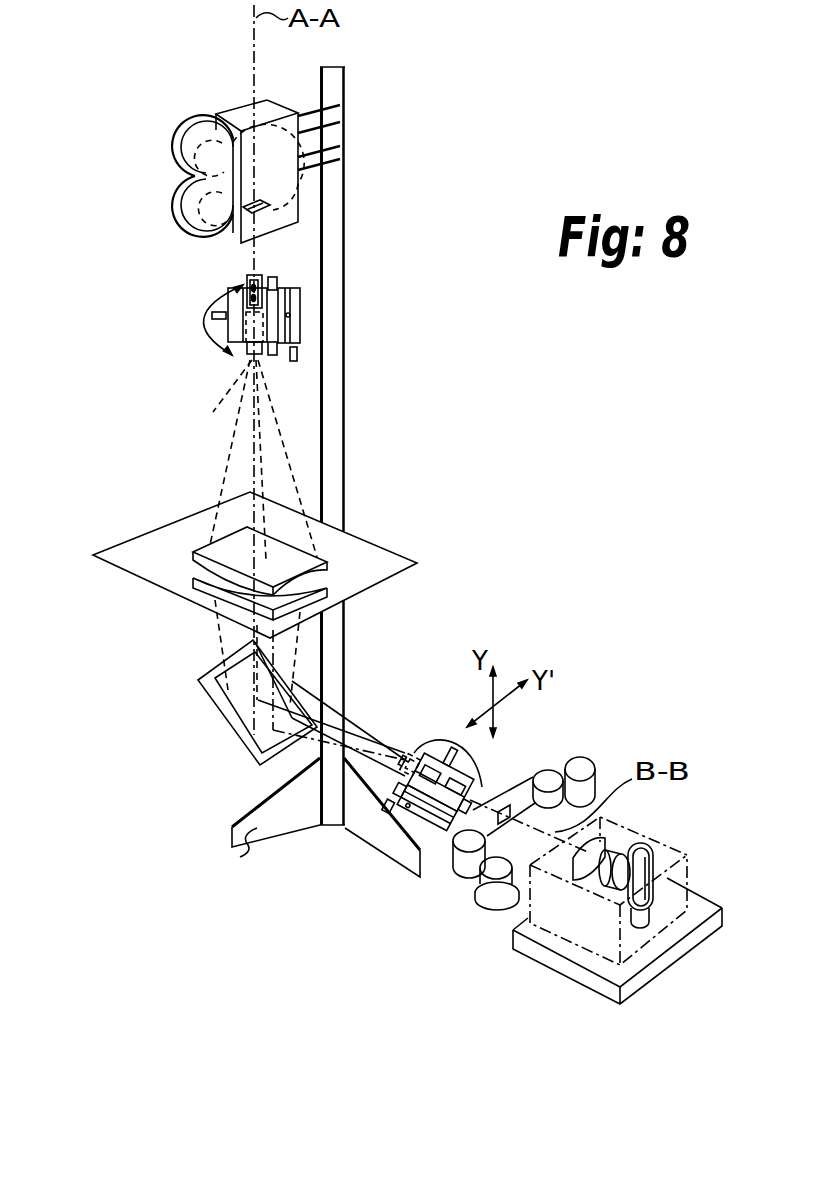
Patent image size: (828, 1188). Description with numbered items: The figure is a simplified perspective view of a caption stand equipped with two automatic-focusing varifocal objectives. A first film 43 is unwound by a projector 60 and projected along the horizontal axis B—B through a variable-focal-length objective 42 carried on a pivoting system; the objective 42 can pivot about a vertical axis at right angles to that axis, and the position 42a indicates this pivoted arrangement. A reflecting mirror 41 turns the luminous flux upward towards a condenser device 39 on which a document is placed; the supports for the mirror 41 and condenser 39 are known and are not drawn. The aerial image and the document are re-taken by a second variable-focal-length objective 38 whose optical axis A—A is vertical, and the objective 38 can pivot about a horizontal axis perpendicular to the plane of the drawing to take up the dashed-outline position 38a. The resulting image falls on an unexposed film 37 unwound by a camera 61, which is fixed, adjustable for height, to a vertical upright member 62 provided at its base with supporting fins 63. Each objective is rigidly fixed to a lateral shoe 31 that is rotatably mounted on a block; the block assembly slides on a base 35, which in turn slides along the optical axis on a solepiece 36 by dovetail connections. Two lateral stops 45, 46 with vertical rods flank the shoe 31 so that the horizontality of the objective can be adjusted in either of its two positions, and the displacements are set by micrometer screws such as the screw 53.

The lateral shoe 31 is at (245, 338).
The base 35 is at (284, 290).
The solepiece 36 is at (299, 302).
The unexposed film 37 is at (283, 188).
The variable-focal-length objective 38 is at (238, 283).
The pivoted position of the objective 38a is at (214, 411).
The condenser device 39 is at (168, 574).
The reflecting mirror 41 is at (224, 724).
The variable-focal-length objective 42 is at (483, 787).
The second camera lens 42a is at (403, 752).
The first film 43 is at (463, 865).
The lateral stop 45 is at (271, 280).
The lateral stop 46 is at (272, 357).
The micrometer screw 53 is at (298, 355).
The projector 60 is at (577, 930).
The camera 61 is at (233, 117).
The vertical upright member 62 is at (336, 407).
The supporting fins 63 is at (346, 796).